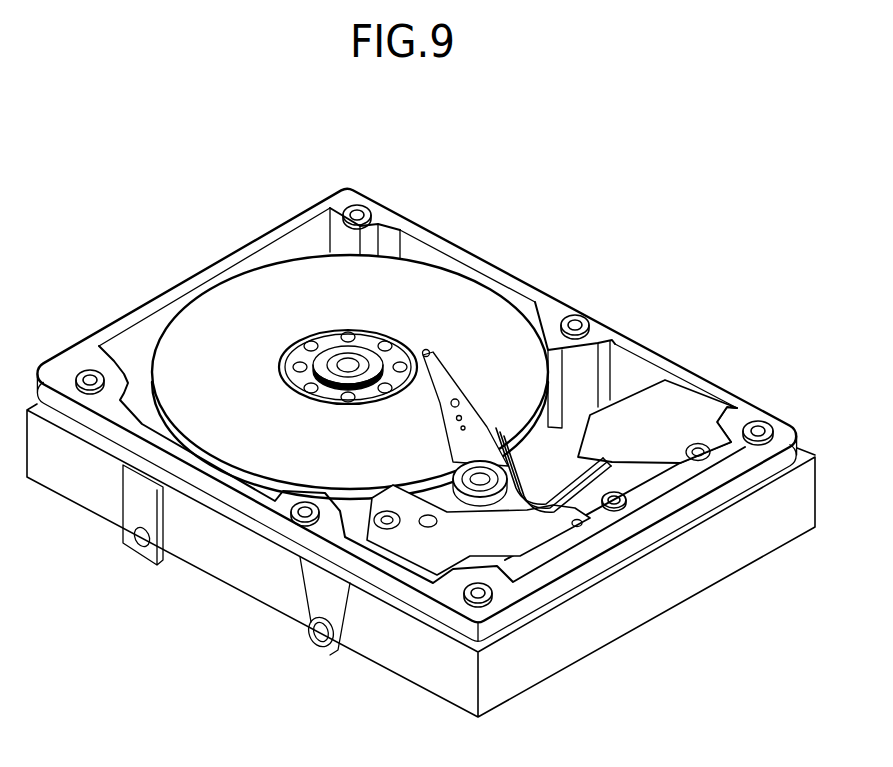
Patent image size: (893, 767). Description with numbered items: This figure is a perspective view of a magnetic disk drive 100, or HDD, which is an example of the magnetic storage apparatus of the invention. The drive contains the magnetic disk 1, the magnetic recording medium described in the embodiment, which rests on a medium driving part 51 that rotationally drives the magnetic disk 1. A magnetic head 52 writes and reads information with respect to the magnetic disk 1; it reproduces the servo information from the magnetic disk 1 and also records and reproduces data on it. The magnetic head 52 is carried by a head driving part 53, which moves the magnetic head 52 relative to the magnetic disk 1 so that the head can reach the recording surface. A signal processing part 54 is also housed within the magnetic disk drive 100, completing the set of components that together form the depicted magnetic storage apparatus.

The magnetic disk drive 100 is at (692, 178).
The magnetic disk 1 is at (408, 302).
The medium driving part 51 is at (287, 347).
The magnetic head 52 is at (427, 352).
The head driving part 53 is at (517, 527).
The signal processing part 54 is at (673, 422).